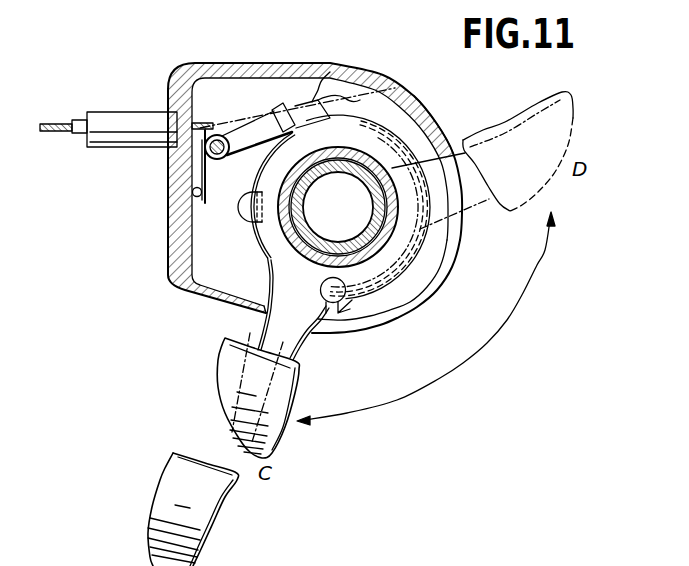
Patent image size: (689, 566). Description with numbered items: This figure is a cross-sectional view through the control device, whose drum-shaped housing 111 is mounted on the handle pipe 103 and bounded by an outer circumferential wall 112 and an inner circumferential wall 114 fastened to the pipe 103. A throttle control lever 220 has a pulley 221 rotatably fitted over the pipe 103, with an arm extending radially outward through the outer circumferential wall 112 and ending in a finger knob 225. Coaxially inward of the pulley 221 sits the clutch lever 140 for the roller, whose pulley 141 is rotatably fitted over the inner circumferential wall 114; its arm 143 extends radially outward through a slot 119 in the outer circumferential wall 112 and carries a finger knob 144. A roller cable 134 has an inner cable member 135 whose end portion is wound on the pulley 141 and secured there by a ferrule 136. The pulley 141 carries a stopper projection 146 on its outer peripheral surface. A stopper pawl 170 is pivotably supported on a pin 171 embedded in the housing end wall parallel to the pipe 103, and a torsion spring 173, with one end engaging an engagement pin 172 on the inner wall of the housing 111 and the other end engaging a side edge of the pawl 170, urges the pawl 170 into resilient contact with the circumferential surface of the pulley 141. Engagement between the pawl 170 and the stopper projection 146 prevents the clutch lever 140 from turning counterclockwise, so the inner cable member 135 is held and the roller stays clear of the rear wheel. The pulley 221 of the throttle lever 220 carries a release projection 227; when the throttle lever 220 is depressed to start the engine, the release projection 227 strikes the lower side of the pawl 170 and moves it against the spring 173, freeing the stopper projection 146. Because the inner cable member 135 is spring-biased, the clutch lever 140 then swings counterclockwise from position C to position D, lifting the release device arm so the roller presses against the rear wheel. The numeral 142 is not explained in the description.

The housing 111 is at (200, 61).
The outer circumferential wall 112 is at (300, 63).
The pulley 221 is at (380, 88).
The slot 119 is at (410, 307).
The handle pipe 103 is at (313, 235).
The inner circumferential wall 114 is at (390, 167).
The ratchet ring 142 is at (380, 252).
The pulley 141 is at (262, 246).
The arm 143 is at (288, 330).
The ferrule 136 is at (325, 282).
The release projection 227 is at (247, 210).
The pin 171 is at (207, 151).
The engagement pin 172 is at (195, 193).
The torsion spring 173 is at (242, 123).
The stopper pawl 170 is at (268, 118).
The stopper projection 146 is at (332, 72).
The roller cable 134 is at (117, 128).
The inner cable member 135 is at (55, 122).
The clutch lever 140 is at (232, 322).
The finger knob 144 is at (240, 405).
The throttle control lever 220 is at (162, 468).
The finger knob 225 is at (178, 514).